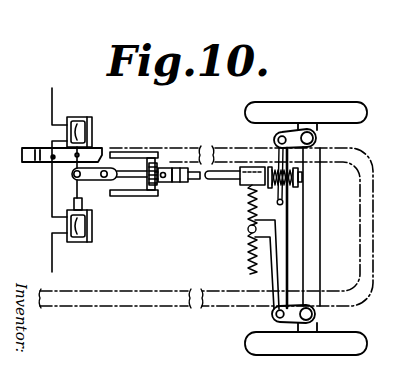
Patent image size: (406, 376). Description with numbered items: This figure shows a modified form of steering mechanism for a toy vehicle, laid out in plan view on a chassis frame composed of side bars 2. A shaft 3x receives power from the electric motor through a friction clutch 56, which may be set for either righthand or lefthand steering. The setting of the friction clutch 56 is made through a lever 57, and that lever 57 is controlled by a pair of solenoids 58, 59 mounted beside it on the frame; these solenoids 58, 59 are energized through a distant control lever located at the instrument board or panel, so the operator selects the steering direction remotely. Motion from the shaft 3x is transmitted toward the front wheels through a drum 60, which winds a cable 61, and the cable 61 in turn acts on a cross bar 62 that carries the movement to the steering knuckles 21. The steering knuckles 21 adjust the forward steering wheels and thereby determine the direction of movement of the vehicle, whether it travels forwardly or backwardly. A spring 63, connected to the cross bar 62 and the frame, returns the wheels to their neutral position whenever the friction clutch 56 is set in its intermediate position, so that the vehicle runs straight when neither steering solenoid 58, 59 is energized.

The side bars 2 is at (93, 154).
The shaft 3x is at (220, 180).
The steering knuckles 21 is at (311, 129).
The friction clutch 56 is at (140, 184).
The lever 57 is at (93, 181).
The solenoid 58 is at (92, 123).
The solenoid 59 is at (90, 236).
The drum 60 is at (295, 186).
The cable 61 is at (279, 166).
The cross bar 62 is at (278, 262).
The spring 63 is at (249, 233).